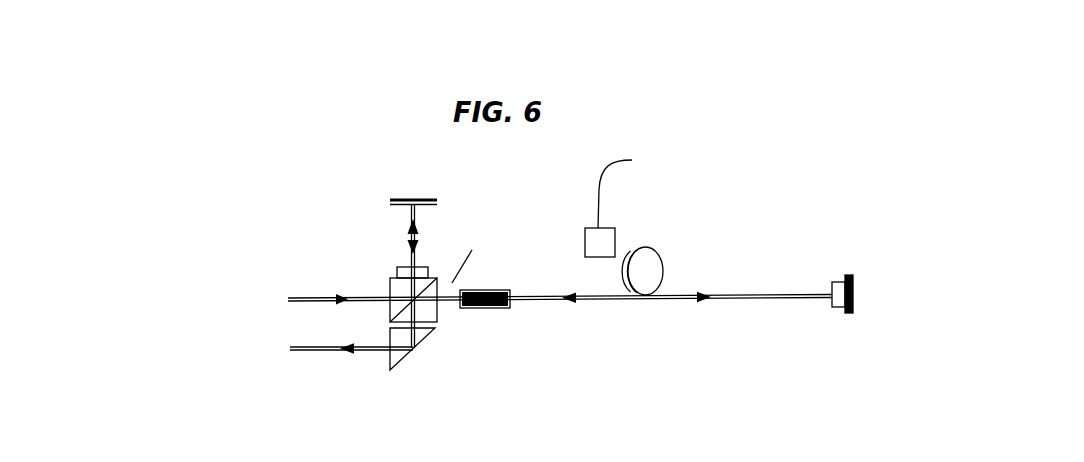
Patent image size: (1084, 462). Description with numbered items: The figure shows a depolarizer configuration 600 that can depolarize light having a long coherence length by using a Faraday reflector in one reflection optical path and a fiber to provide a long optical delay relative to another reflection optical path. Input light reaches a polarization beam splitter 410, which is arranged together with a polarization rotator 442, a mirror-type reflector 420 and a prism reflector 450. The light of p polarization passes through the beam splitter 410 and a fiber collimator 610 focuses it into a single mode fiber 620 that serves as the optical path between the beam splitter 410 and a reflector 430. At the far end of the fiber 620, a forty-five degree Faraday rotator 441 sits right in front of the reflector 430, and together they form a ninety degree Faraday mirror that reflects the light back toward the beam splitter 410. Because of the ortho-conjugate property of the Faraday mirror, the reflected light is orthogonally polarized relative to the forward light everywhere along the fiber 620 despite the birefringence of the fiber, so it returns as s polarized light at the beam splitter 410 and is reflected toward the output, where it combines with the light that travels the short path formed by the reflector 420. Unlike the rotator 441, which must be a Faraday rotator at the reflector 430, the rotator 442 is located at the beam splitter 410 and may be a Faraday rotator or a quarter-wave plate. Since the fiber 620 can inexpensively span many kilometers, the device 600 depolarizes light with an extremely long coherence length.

The configuration 600 is at (338, 157).
The reflector 420 is at (438, 197).
The polarization rotator 442 is at (387, 270).
The polarization beam splitter 410 is at (442, 322).
The prism reflector 450 is at (412, 367).
The fiber collimator 610 is at (503, 313).
The single mode fiber 620 is at (638, 248).
The 45-degree Faraday rotator 441 is at (832, 263).
The reflector 430 is at (853, 290).